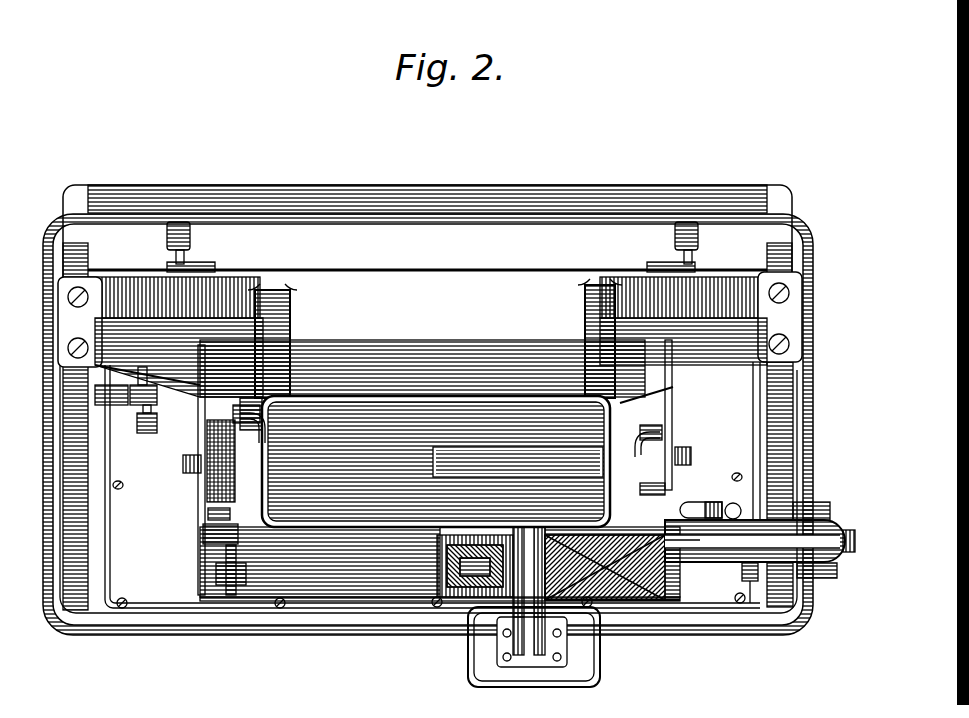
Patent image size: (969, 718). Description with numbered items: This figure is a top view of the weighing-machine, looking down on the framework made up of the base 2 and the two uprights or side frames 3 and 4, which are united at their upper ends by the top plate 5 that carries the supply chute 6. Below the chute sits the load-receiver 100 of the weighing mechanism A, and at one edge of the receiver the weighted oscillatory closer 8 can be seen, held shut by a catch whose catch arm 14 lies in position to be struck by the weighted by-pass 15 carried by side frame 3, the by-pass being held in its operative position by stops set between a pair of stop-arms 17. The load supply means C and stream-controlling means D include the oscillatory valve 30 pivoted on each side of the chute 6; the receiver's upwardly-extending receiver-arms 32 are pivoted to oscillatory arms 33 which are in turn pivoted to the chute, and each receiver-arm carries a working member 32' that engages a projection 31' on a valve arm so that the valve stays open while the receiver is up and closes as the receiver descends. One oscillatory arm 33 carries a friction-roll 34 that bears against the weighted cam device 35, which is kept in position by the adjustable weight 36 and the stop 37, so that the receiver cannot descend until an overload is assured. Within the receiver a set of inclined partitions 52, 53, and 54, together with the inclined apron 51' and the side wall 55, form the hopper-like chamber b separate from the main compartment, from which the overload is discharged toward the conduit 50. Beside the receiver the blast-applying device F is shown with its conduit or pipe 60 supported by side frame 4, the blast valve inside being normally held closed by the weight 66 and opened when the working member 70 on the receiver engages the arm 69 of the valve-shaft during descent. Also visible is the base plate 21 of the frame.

The base 2 is at (182, 624).
The base plate 21 is at (152, 600).
The side frame 3 is at (88, 516).
The side frame 4 is at (793, 414).
The top plate 5 is at (108, 290).
The chute 6 is at (342, 530).
The oscillatory closer 8 is at (349, 270).
The catch arm 14 is at (133, 375).
The by-pass 15 is at (134, 428).
The stop-arm 17 is at (136, 380).
The oscillatory valve 30 is at (253, 427).
The projection 31' is at (437, 424).
The receiver-arm 32 is at (433, 459).
The working member 32' is at (437, 415).
The oscillatory arm 33 is at (197, 445).
The friction-roll 34 is at (208, 505).
The cam device 35 is at (202, 530).
The adjustable weight 36 is at (214, 590).
The stop 37 is at (225, 540).
The conduit 50 is at (477, 657).
The inclined apron 51' is at (682, 475).
The partition 52 is at (493, 540).
The partition 53 is at (620, 612).
The partition 54 is at (665, 542).
The side wall 55 is at (437, 560).
The conduit or pipe 60 is at (800, 520).
The weight 66 is at (742, 576).
The arm 69 is at (738, 500).
The working member 70 is at (707, 502).
The load-receiver 100 is at (322, 590).
The weighing mechanism A is at (198, 472).
The load supply means C is at (342, 522).
The stream-controlling means D is at (425, 338).
The blast-applying device F is at (755, 541).
The chamber b is at (605, 567).